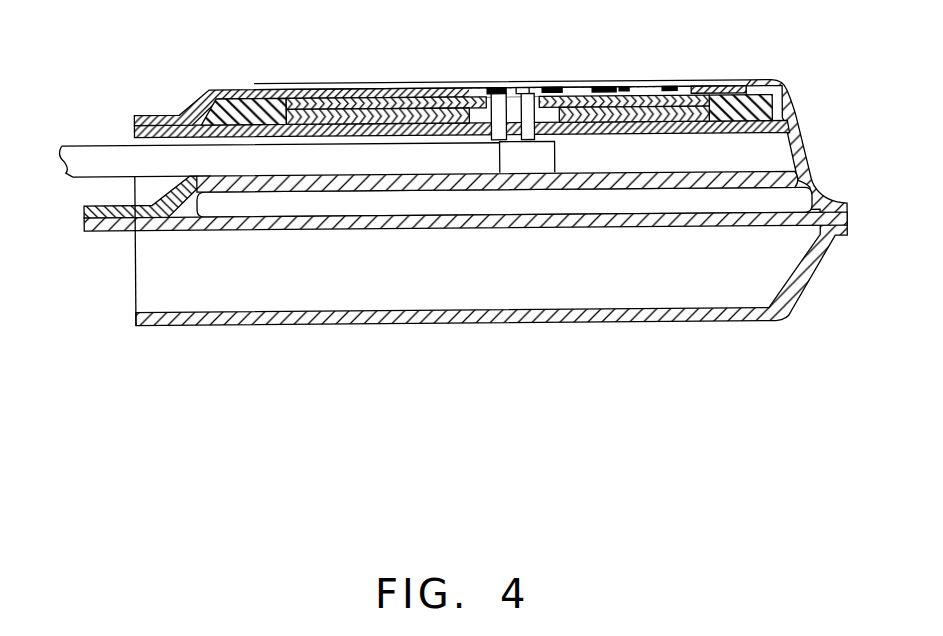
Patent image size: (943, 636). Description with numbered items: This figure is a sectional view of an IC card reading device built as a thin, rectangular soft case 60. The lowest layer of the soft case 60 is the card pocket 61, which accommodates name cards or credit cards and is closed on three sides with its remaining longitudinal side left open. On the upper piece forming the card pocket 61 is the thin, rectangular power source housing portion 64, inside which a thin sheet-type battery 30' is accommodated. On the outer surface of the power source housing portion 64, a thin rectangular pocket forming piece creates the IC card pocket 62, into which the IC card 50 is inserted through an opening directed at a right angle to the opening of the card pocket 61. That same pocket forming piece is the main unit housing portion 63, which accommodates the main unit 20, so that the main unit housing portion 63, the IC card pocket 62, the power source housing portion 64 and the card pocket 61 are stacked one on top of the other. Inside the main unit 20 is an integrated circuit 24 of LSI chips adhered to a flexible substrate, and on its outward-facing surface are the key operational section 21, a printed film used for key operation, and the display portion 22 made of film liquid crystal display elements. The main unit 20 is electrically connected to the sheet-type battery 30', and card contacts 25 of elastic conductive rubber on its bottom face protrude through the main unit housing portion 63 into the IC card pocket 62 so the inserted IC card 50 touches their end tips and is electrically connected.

The main unit 20 is at (462, 77).
The key operational section 21 is at (493, 88).
The display portion 22 is at (362, 95).
The integrated circuit 24 is at (625, 87).
The card contacts 25 is at (498, 143).
The sheet-type battery 30' is at (466, 231).
The IC card 50 is at (72, 167).
The soft case 60 is at (520, 225).
The card pocket 61 is at (272, 296).
The IC card pocket 62 is at (793, 152).
The main unit housing portion 63 is at (784, 112).
The power source housing portion 64 is at (828, 205).